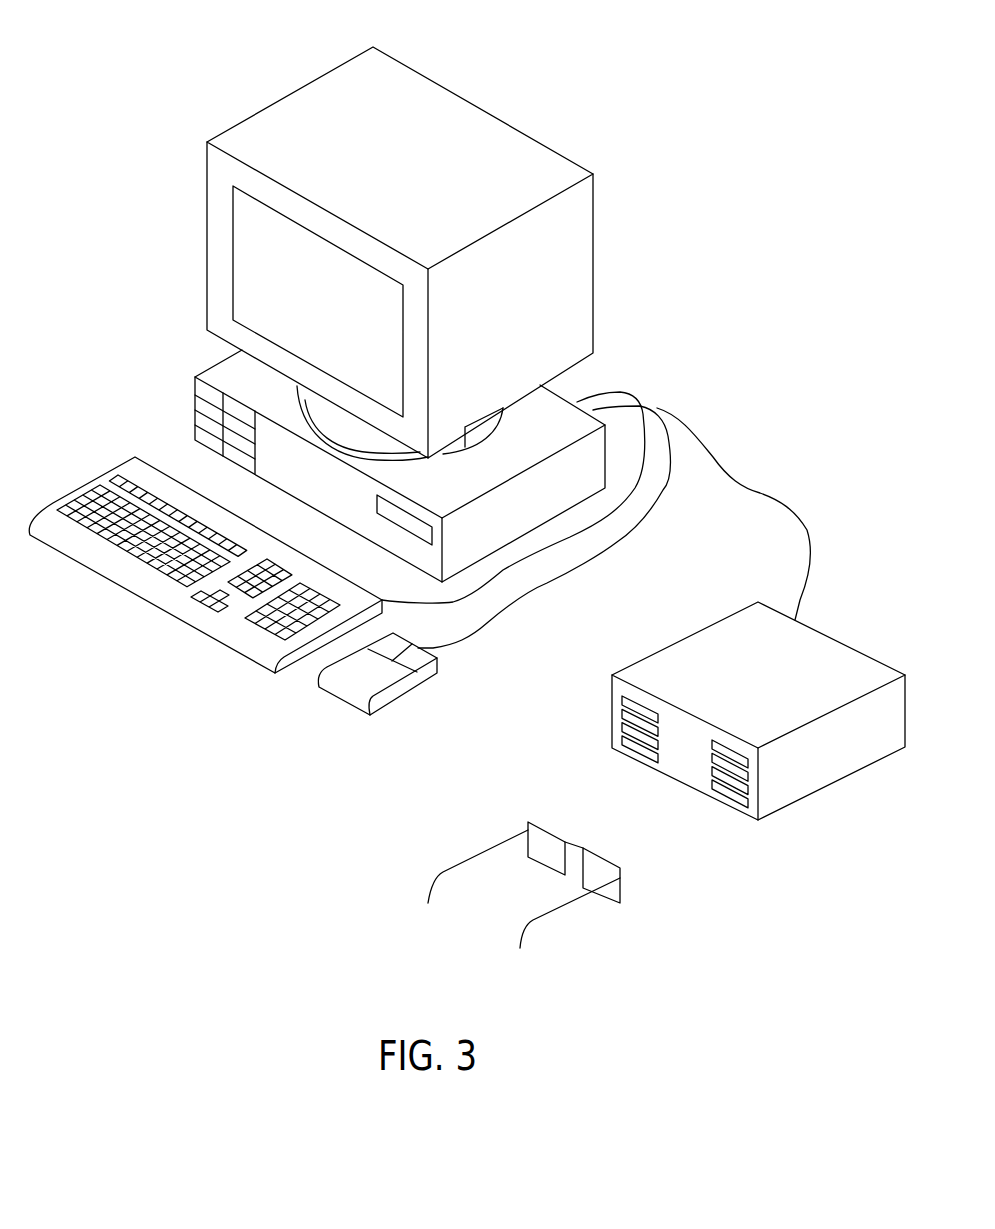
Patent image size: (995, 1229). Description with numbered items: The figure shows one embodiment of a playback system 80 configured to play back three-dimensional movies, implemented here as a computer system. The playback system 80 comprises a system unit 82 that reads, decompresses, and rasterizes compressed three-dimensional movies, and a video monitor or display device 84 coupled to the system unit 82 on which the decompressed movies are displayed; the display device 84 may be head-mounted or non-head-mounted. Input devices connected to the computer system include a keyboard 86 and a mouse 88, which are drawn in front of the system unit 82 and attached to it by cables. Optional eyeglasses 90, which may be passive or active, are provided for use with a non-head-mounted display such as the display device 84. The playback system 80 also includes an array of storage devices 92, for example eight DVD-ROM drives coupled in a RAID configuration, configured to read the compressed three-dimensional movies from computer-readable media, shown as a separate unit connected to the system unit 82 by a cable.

The playback system 80 is at (180, 92).
The system unit 82 is at (212, 376).
The display device 84 is at (467, 132).
The keyboard 86 is at (175, 602).
The mouse 88 is at (357, 683).
The eyeglasses 90 is at (573, 912).
The array of storage devices 92 is at (775, 677).